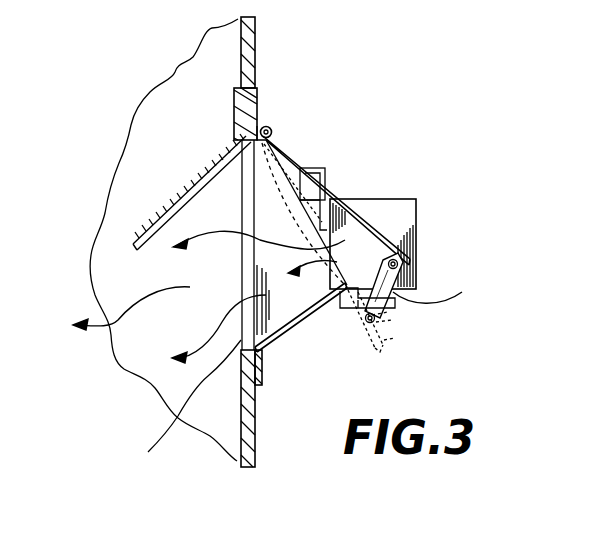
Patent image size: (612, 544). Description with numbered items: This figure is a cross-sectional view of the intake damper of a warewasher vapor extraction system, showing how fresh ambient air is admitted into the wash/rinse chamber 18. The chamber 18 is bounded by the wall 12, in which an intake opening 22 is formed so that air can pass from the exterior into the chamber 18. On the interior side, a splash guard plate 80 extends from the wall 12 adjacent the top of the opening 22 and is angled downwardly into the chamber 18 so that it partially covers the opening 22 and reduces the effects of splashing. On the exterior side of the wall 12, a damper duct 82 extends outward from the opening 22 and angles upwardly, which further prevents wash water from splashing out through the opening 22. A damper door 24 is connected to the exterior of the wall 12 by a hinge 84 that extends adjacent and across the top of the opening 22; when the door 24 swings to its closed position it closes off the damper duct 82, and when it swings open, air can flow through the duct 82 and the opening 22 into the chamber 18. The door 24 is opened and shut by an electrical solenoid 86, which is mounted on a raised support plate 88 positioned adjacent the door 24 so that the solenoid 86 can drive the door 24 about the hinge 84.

The wall 12 is at (257, 44).
The chamber 18 is at (178, 77).
The intake opening 22 is at (174, 419).
The damper door 24 is at (350, 201).
The splash guard plate 80 is at (207, 176).
The damper duct 82 is at (284, 320).
The hinge 84 is at (276, 125).
The electrical solenoid 86 is at (416, 219).
The raised support plate 88 is at (325, 168).